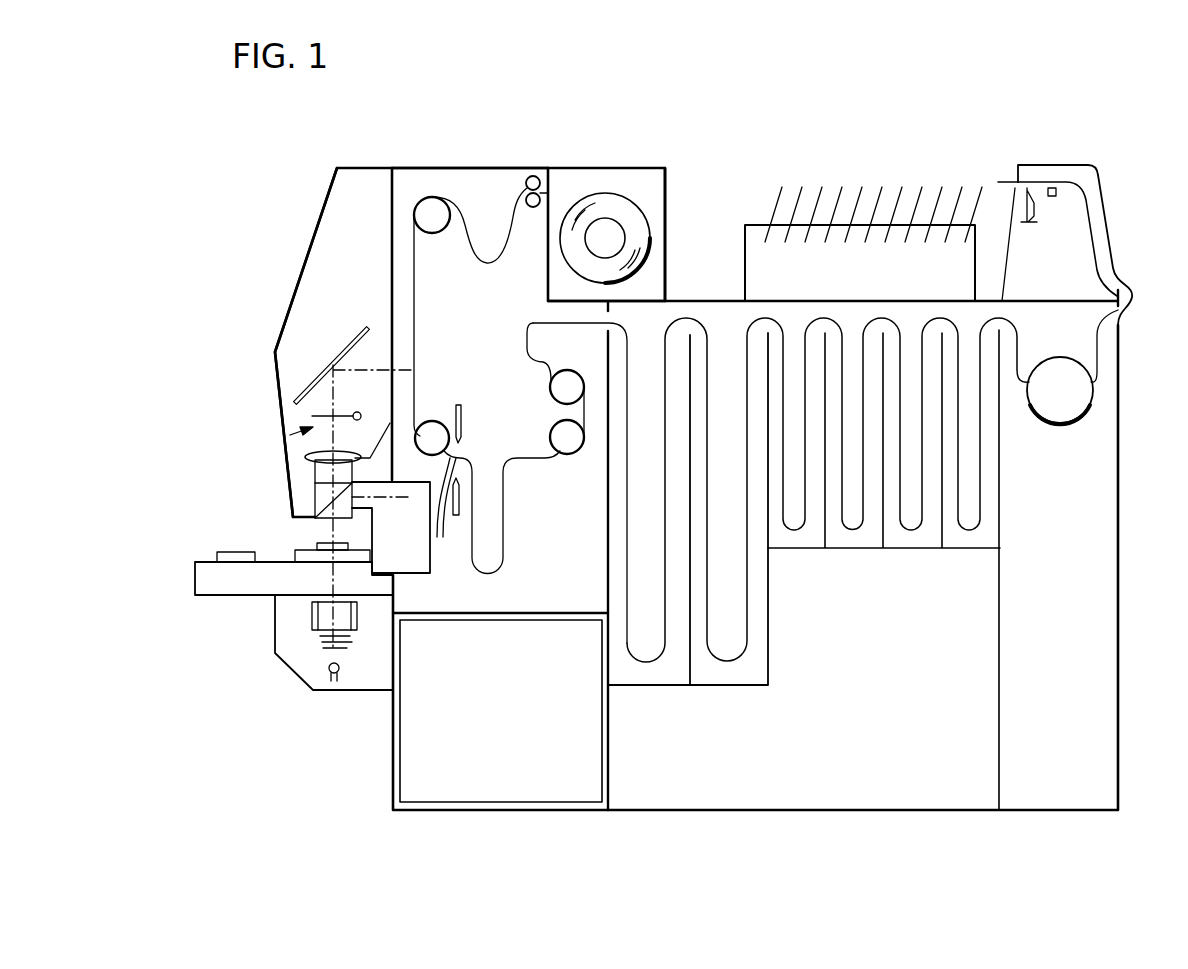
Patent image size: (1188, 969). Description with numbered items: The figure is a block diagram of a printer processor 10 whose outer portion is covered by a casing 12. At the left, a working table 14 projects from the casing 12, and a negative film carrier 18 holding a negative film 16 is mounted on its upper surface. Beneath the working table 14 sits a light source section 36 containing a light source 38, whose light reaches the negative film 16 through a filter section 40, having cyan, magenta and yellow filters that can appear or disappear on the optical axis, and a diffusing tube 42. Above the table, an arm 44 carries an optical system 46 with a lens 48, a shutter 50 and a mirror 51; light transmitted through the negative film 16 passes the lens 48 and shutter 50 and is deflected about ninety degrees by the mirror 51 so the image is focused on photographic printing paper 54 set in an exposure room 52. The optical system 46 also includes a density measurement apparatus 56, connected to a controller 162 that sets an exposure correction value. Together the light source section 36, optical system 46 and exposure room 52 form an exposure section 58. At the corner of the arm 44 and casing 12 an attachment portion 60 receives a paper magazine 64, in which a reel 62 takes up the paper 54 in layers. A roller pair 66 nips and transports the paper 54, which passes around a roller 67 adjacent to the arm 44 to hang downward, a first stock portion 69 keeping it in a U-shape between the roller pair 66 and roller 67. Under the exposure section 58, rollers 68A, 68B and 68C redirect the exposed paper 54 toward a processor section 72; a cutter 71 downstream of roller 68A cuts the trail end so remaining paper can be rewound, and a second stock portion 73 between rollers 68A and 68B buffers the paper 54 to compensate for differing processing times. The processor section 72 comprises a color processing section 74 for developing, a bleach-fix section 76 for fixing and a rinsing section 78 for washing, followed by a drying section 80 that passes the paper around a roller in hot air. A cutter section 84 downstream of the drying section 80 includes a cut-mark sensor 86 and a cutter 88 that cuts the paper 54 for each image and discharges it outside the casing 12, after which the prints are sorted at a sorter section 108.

The printer processor 10 is at (721, 124).
The casing 12 is at (472, 166).
The working table 14 is at (203, 584).
The negative film 16 is at (330, 543).
The negative film carrier 18 is at (303, 549).
The light source section 36 is at (294, 671).
The light source 38 is at (344, 672).
The filter section 40 is at (357, 633).
The diffusing tube 42 is at (360, 618).
The arm 44 is at (317, 264).
The optical system 46 is at (290, 435).
The lens 48 is at (305, 456).
The shutter 50 is at (318, 410).
The mirror 51 is at (340, 352).
The exposure room 52 is at (360, 313).
The photographic printing paper 54 is at (508, 500).
The density measurement apparatus 56 is at (391, 507).
The exposure section 58 is at (608, 848).
The attachment portion 60 is at (545, 182).
The reel 62 is at (622, 233).
The paper magazine 64 is at (668, 187).
The roller pair 66 is at (527, 176).
The roller 67 is at (432, 197).
The roller 68A is at (433, 421).
The roller 68B is at (554, 441).
The roller 68C is at (552, 393).
The first stock portion 69 is at (482, 228).
The cutter 71 is at (450, 489).
The processor section 72 is at (990, 848).
The second stock portion 73 is at (497, 557).
The color processing section 74 is at (653, 680).
The bleach-fix section 76 is at (742, 680).
The rinsing section 78 is at (985, 555).
The drying section 80 is at (1118, 652).
The cutter section 84 is at (1050, 170).
The cut-mark sensor 86 is at (1080, 178).
The cutter 88 is at (1018, 205).
The sorter section 108 is at (756, 226).
The controller 162 is at (590, 760).